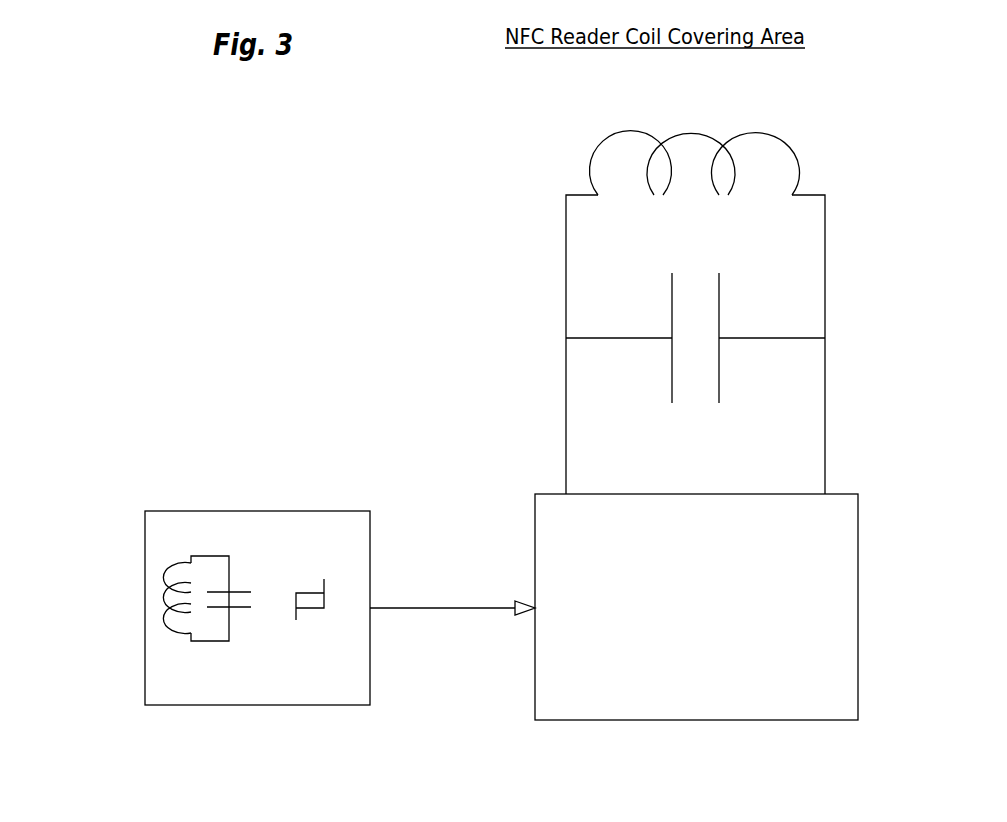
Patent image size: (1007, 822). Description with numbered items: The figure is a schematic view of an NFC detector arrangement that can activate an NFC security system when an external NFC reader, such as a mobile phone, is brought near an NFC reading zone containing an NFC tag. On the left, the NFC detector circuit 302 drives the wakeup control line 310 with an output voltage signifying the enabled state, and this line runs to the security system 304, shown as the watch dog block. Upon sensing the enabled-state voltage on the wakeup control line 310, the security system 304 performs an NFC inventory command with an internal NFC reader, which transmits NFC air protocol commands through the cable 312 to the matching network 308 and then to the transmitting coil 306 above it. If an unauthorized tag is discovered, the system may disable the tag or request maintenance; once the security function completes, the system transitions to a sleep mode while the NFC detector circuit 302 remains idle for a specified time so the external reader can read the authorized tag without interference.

The NFC detector circuit 302 is at (312, 511).
The security system 304 is at (683, 720).
The transmitting coil 306 is at (797, 152).
The matching network 308 is at (720, 365).
The wakeup control line 310 is at (418, 608).
The cable 312 is at (566, 445).